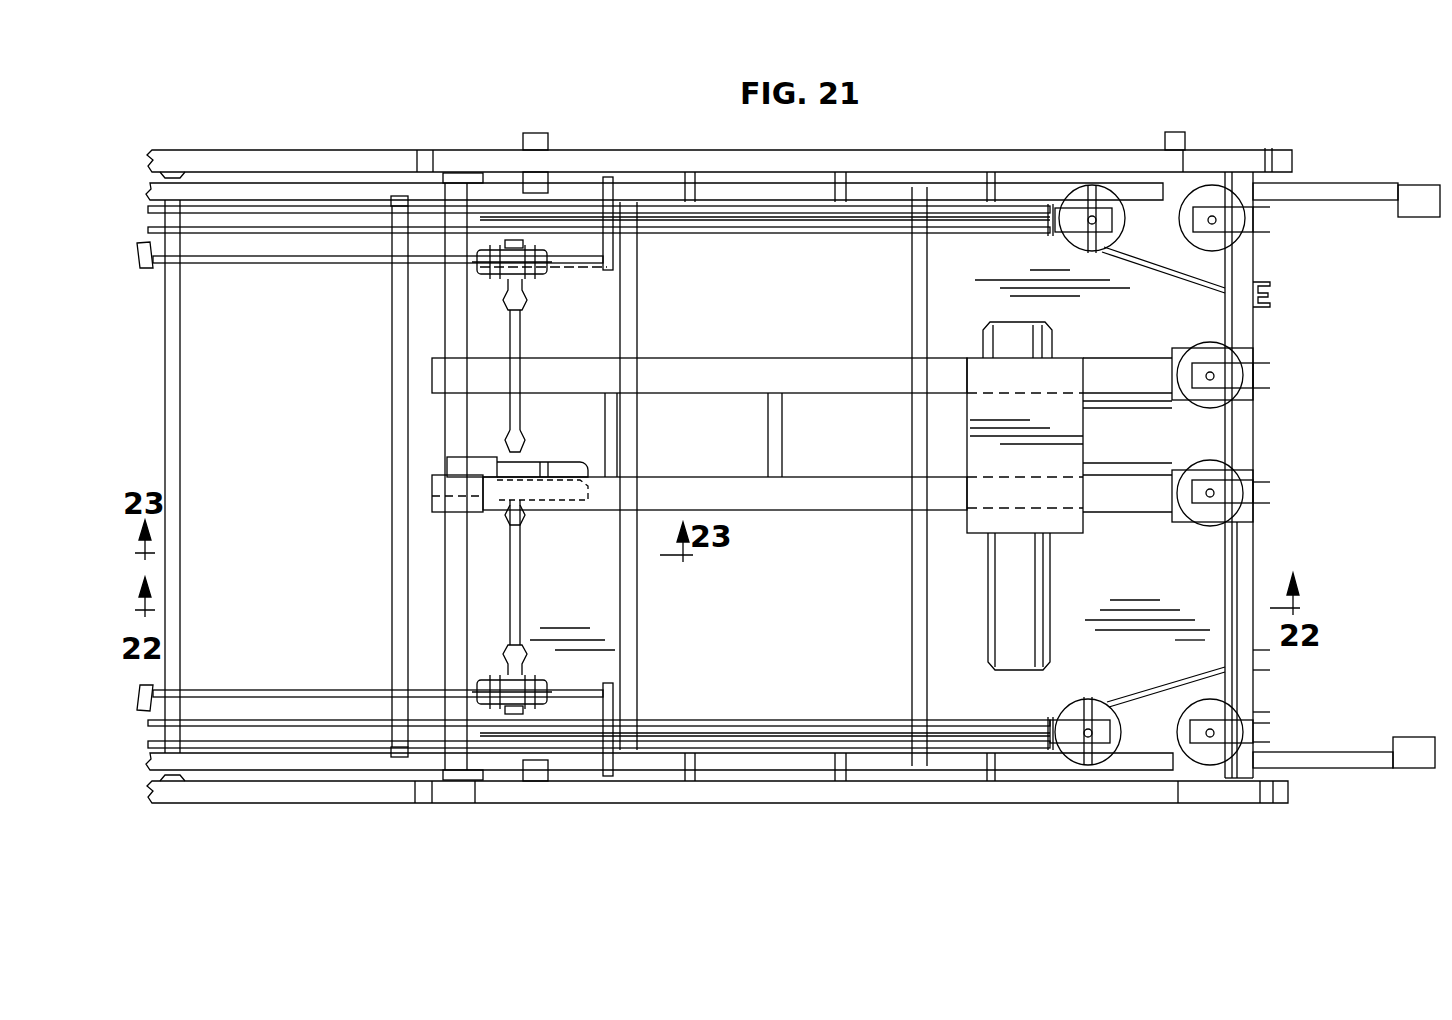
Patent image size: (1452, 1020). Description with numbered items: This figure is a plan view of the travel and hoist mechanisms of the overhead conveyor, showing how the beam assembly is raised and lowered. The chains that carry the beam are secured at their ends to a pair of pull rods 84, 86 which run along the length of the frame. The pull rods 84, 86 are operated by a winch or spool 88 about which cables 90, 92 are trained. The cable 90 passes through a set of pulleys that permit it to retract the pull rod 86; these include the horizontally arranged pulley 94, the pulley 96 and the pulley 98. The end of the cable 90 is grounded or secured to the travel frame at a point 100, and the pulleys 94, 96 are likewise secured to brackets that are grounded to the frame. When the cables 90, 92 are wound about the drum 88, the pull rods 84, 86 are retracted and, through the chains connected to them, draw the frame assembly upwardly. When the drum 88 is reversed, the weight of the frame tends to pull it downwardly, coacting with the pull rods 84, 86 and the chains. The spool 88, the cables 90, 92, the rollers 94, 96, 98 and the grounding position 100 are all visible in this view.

The pull rod 84 is at (685, 752).
The pull rod 86 is at (813, 202).
The winch or spool 88 is at (1083, 427).
The cable 90 is at (1217, 413).
The cable 92 is at (1152, 465).
The horizontally arranged pulley 94 is at (1220, 330).
The pulley 96 is at (1220, 197).
The pulley 98 is at (1102, 197).
The grounding point 100 is at (1273, 293).